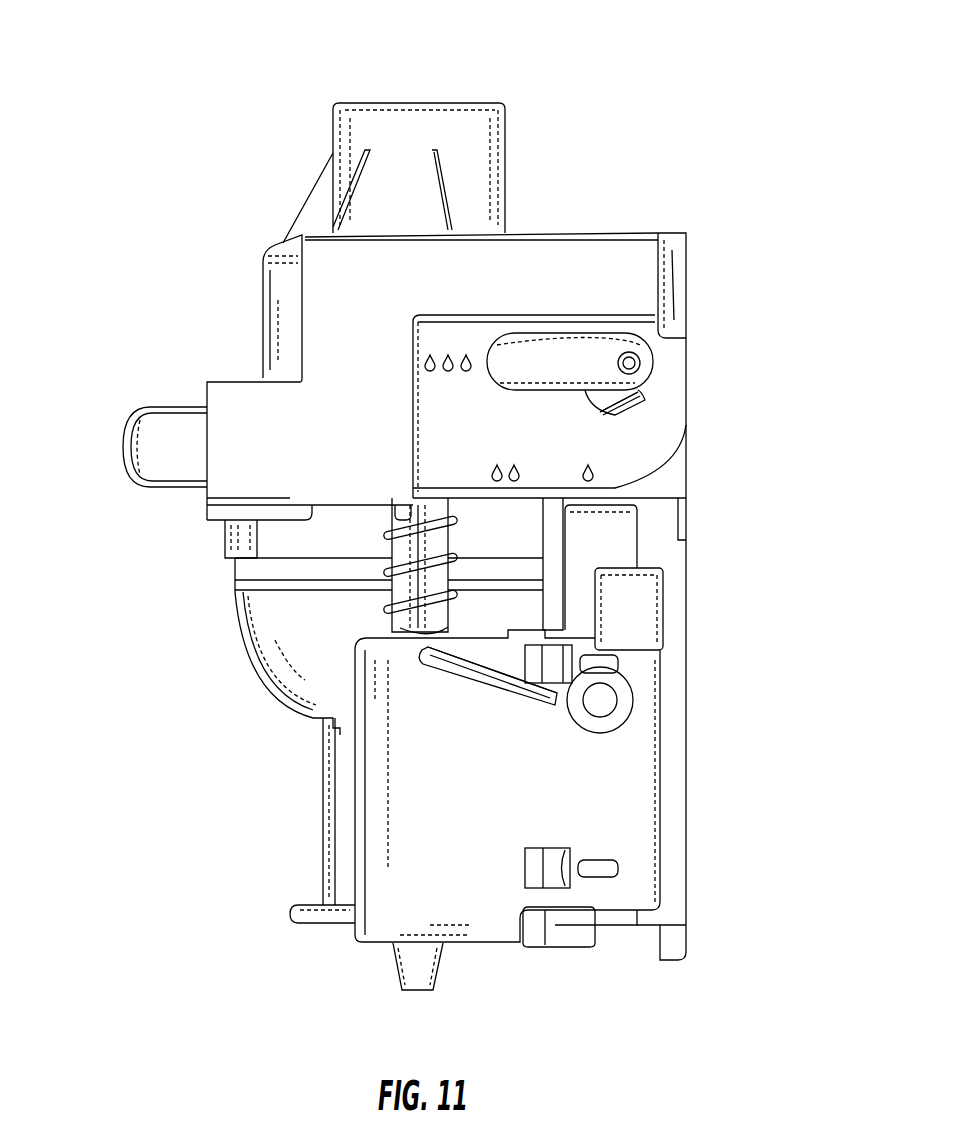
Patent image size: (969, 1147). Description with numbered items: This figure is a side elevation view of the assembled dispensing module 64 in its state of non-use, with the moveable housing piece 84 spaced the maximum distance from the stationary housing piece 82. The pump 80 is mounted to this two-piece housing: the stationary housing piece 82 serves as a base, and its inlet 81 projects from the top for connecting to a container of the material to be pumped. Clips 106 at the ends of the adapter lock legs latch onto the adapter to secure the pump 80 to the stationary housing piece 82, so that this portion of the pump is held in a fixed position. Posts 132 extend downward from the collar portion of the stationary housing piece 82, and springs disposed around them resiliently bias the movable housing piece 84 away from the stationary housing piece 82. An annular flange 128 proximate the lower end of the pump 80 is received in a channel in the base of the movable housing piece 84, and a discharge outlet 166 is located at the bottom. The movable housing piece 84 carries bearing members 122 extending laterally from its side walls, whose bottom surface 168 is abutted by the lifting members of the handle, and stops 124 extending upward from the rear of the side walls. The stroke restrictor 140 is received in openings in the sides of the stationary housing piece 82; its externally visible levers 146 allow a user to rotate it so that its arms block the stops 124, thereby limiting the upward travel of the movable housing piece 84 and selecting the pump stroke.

The dispensing module 64 is at (676, 73).
The inlet 81 is at (412, 103).
The stationary housing piece 82 is at (236, 396).
The clips 106 is at (130, 443).
The levers 146 is at (580, 355).
The stroke restrictor 140 is at (656, 363).
The posts 132 is at (393, 515).
The stops 124 is at (648, 608).
The pump 80 is at (258, 620).
The bottom surface 168 is at (483, 690).
The bearing members 122 is at (553, 700).
The movable housing piece 84 is at (380, 808).
The annular flange 128 is at (296, 912).
The discharge outlet 166 is at (422, 975).